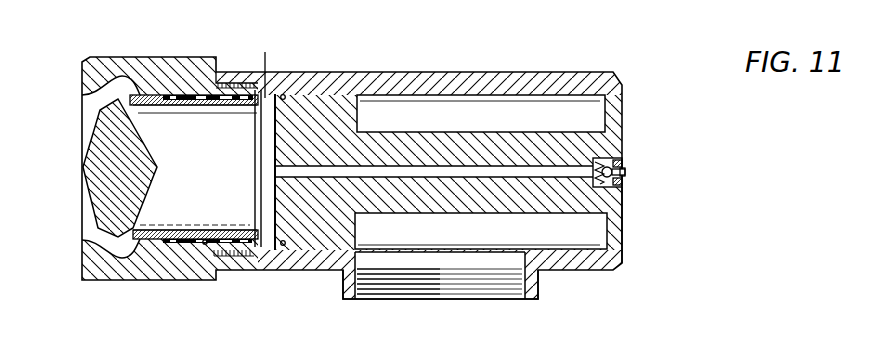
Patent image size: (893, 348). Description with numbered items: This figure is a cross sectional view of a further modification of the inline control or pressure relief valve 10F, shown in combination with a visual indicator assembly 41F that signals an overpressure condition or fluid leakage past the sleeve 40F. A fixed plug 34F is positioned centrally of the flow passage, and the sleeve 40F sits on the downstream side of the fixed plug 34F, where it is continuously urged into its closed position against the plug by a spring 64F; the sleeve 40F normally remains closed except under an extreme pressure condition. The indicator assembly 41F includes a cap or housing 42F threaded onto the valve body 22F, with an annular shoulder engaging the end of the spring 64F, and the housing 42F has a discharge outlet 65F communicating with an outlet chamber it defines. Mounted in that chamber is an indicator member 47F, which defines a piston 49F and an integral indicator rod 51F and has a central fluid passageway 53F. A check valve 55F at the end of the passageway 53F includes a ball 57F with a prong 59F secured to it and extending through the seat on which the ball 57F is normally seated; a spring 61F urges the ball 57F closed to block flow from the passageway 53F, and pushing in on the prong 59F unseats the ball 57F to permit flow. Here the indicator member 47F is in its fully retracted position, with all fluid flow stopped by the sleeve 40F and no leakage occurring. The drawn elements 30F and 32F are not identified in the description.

The valve 10F is at (322, 39).
The valve body 22F is at (184, 58).
The seat ring 30F is at (91, 222).
The sleeve 32F is at (203, 217).
The fixed plug 34F is at (148, 170).
The sleeve 40F is at (189, 108).
The visual indicator assembly 41F is at (410, 82).
The housing 42F is at (545, 85).
The indicator member 47F is at (468, 211).
The piston 49F is at (337, 121).
The indicator rod 51F is at (545, 140).
The central fluid passageway 53F is at (405, 178).
The check valve 55F is at (625, 161).
The ball 57F is at (618, 150).
The prong 59F is at (627, 173).
The spring 61F is at (605, 184).
The spring 64F is at (204, 245).
The discharge outlet 65F is at (519, 288).